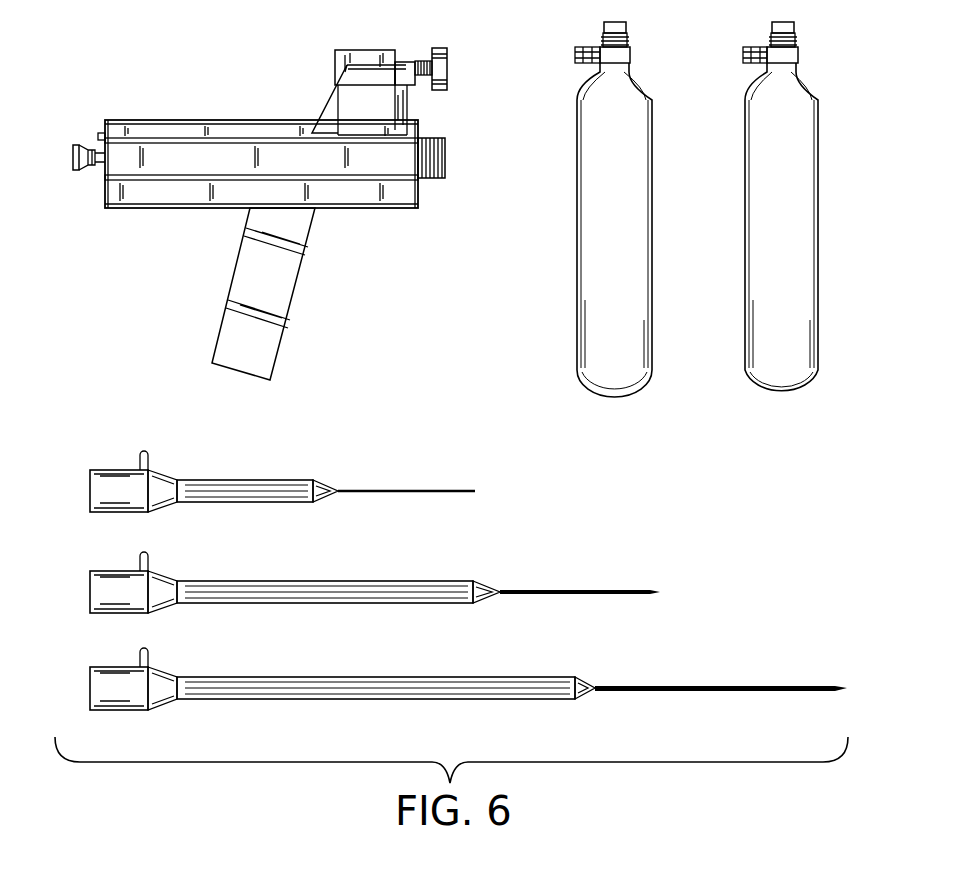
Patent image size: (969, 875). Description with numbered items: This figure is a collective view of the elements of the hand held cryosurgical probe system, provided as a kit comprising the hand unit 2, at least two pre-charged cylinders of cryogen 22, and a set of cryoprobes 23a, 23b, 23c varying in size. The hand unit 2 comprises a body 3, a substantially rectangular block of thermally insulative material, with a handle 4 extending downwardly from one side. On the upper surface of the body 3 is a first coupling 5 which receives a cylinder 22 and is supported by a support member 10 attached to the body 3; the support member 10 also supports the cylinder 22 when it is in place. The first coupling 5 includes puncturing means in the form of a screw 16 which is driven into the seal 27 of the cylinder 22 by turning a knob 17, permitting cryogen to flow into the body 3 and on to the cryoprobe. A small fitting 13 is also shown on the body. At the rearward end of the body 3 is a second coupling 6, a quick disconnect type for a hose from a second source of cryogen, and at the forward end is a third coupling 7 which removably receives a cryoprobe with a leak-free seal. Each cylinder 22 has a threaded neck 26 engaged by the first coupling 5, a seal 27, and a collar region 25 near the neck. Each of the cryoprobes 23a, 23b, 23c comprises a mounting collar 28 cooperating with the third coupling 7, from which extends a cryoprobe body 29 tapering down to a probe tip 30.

The hand unit 2 is at (216, 90).
The body 3 is at (180, 208).
The handle 4 is at (240, 283).
The first coupling 5 is at (364, 48).
The second coupling 6 is at (75, 172).
The third coupling 7 is at (445, 172).
The support member 10 is at (330, 104).
The fitting 13 is at (100, 137).
The screw 16 is at (425, 60).
The knob 17 is at (448, 66).
The pre-charged cylinder of cryogen 22 is at (745, 232).
The cryoprobe 23a is at (208, 474).
The cryoprobe 23b is at (284, 576).
The cryoprobe 23c is at (303, 672).
The collar 25 is at (620, 58).
The threaded neck 26 is at (626, 38).
The seal 27 is at (618, 22).
The mounting collar 28 is at (118, 512).
The cryoprobe body 29 is at (242, 503).
The probe tip 30 is at (433, 493).